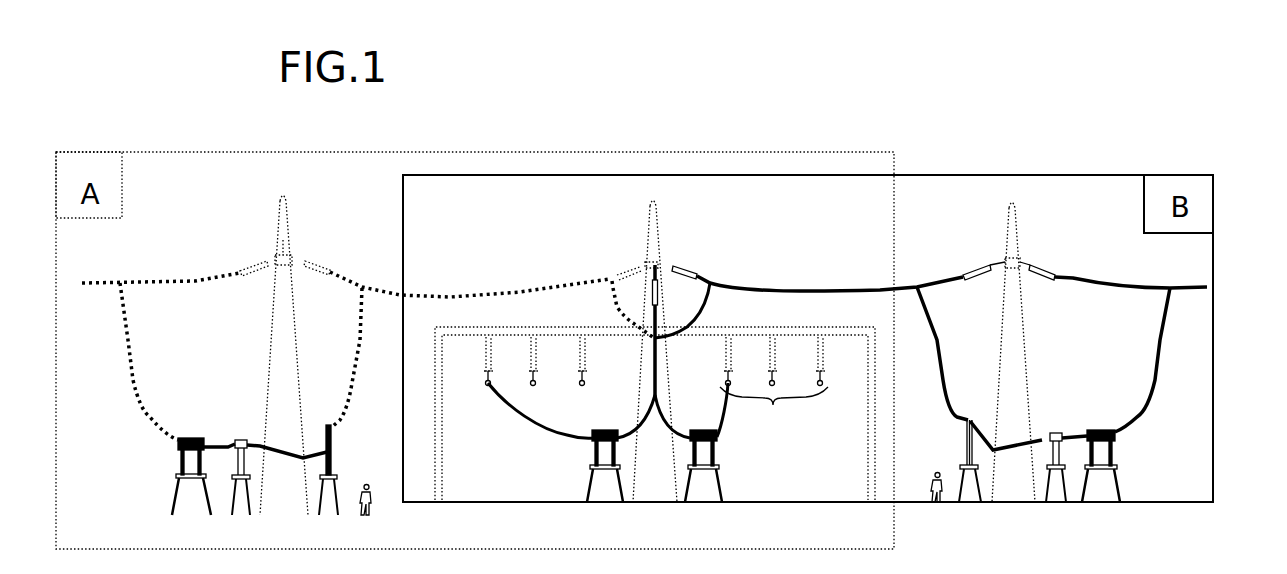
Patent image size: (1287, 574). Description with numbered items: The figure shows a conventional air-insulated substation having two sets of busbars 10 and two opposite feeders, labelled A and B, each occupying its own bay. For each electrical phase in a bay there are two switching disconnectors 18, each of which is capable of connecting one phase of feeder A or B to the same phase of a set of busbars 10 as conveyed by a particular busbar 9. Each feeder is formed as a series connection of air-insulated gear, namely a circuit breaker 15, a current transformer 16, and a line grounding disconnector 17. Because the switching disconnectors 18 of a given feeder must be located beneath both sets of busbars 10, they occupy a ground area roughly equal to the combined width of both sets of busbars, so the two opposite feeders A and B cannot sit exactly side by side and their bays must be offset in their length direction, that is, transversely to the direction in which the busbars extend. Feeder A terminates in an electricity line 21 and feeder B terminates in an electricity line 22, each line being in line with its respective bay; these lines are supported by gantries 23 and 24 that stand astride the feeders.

The busbar 9 is at (533, 377).
The set of busbars 10 is at (774, 414).
The circuit breaker 15 is at (970, 483).
The current transformer 16 is at (1052, 480).
The line grounding disconnector 17 is at (1102, 450).
The switching disconnector 18 is at (605, 447).
The electricity line 21 is at (193, 281).
The electricity line 22 is at (1075, 278).
The gantry 23 is at (285, 238).
The gantry 24 is at (1012, 252).